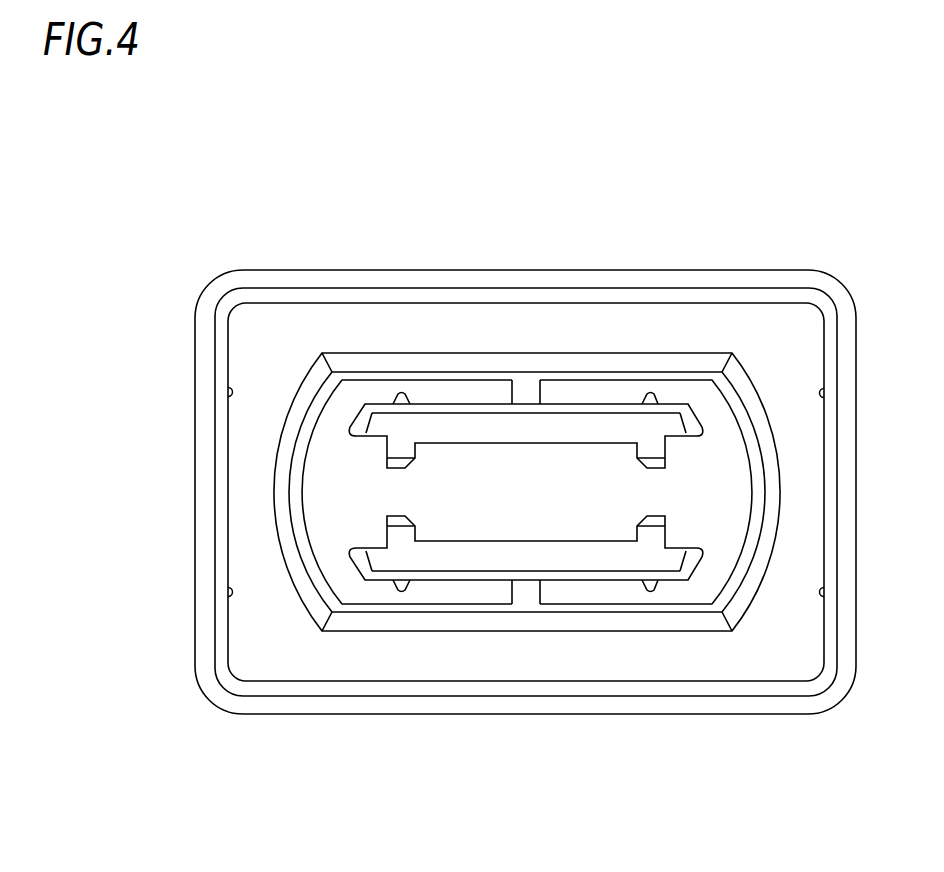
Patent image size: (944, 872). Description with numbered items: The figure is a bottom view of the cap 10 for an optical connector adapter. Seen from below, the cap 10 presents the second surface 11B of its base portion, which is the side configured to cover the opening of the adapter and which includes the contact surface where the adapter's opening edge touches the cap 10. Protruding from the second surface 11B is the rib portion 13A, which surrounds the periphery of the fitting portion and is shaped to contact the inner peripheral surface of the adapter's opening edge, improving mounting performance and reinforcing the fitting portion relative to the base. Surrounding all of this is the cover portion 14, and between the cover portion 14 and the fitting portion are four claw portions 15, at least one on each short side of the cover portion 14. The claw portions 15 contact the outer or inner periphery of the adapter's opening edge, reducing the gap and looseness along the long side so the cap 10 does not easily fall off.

The cap 10 is at (803, 240).
The second surface 11B is at (475, 470).
The rib portion 13A is at (690, 360).
The cover portion 14 is at (356, 703).
The claw portion 15 is at (233, 391).